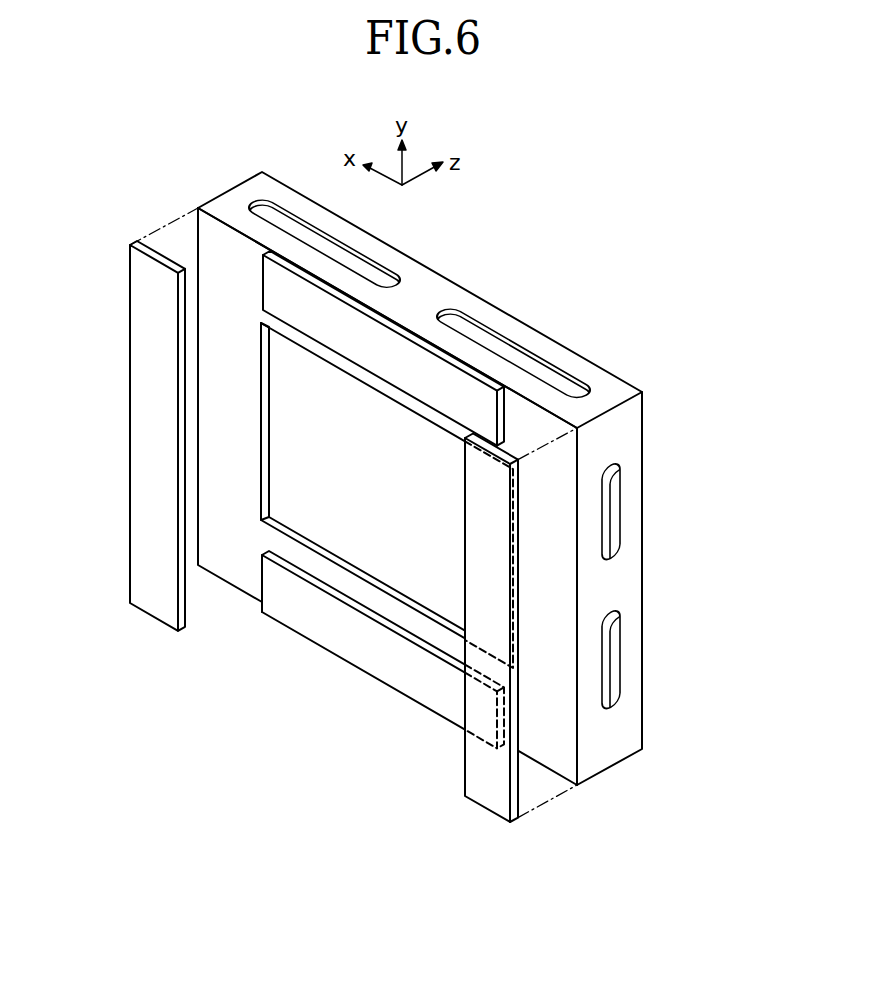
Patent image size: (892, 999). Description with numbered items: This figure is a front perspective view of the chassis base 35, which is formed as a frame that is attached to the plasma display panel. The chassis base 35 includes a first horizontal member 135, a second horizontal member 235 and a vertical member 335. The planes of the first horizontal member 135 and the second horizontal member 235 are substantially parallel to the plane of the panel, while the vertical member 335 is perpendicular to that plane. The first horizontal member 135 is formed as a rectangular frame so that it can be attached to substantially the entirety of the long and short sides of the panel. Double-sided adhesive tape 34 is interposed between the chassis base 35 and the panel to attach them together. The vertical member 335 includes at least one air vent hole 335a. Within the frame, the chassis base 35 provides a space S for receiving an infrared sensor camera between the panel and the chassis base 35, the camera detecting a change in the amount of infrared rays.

The double-sided adhesive tape 34 is at (290, 296).
The chassis base 35 is at (485, 478).
The first horizontal member 135 is at (447, 298).
The second horizontal member 235 is at (573, 365).
The vertical member 335 is at (462, 289).
The air vent hole 335a is at (578, 385).
The space S is at (353, 536).